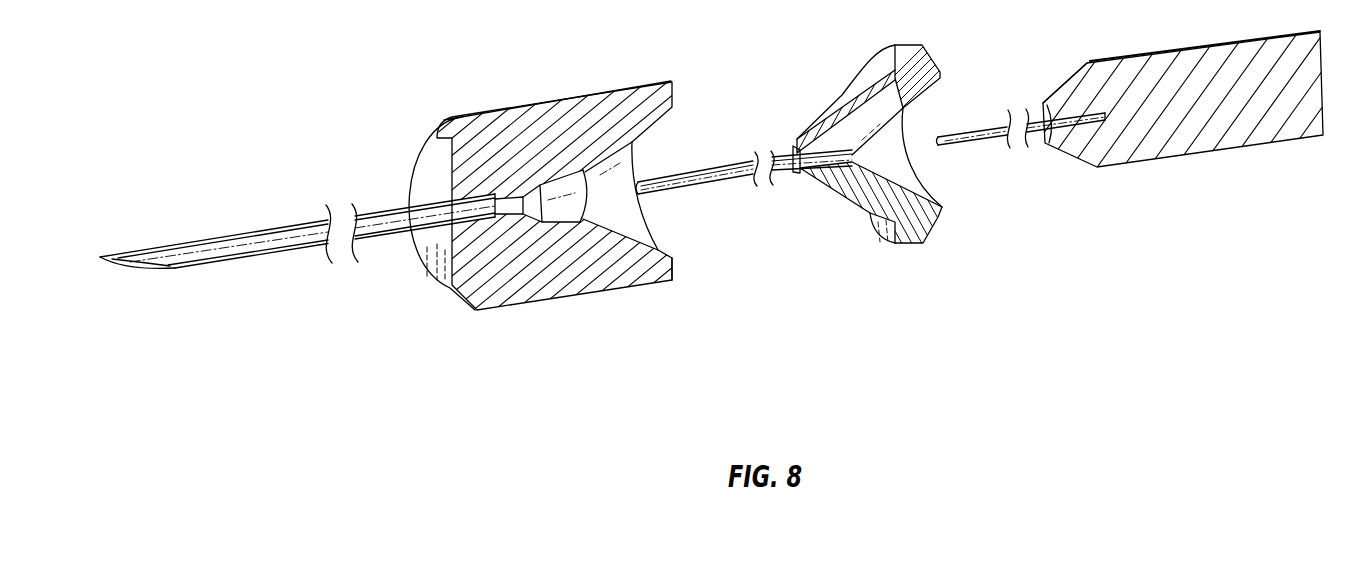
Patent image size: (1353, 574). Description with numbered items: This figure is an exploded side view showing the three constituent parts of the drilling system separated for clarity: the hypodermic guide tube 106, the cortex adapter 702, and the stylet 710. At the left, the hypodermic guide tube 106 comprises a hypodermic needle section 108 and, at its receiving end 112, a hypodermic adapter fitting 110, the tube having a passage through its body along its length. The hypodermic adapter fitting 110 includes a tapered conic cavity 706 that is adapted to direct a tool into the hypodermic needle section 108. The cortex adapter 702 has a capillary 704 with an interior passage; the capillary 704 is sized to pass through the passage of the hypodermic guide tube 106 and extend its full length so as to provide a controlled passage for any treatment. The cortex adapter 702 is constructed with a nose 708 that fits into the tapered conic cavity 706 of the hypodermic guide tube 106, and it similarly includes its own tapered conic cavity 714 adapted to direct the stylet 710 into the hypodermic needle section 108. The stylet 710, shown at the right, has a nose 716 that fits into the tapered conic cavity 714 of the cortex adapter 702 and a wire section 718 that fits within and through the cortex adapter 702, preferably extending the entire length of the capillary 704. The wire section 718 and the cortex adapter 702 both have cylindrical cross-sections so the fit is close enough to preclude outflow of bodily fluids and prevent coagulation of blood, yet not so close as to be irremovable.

The hypodermic guide tube 106 is at (383, 279).
The hypodermic needle section 108 is at (254, 231).
The hypodermic adapter fitting 110 is at (565, 277).
The receiving end 112 is at (673, 267).
The cortex adapter 702 is at (956, 246).
The capillary 704 is at (731, 165).
The tapered conic cavity 706 is at (642, 235).
The nose 708 is at (833, 197).
The stylet 710 is at (1243, 166).
The tapered conic cavity 714 is at (142, 268).
The nose 716 is at (1078, 81).
The wire section 718 is at (997, 128).